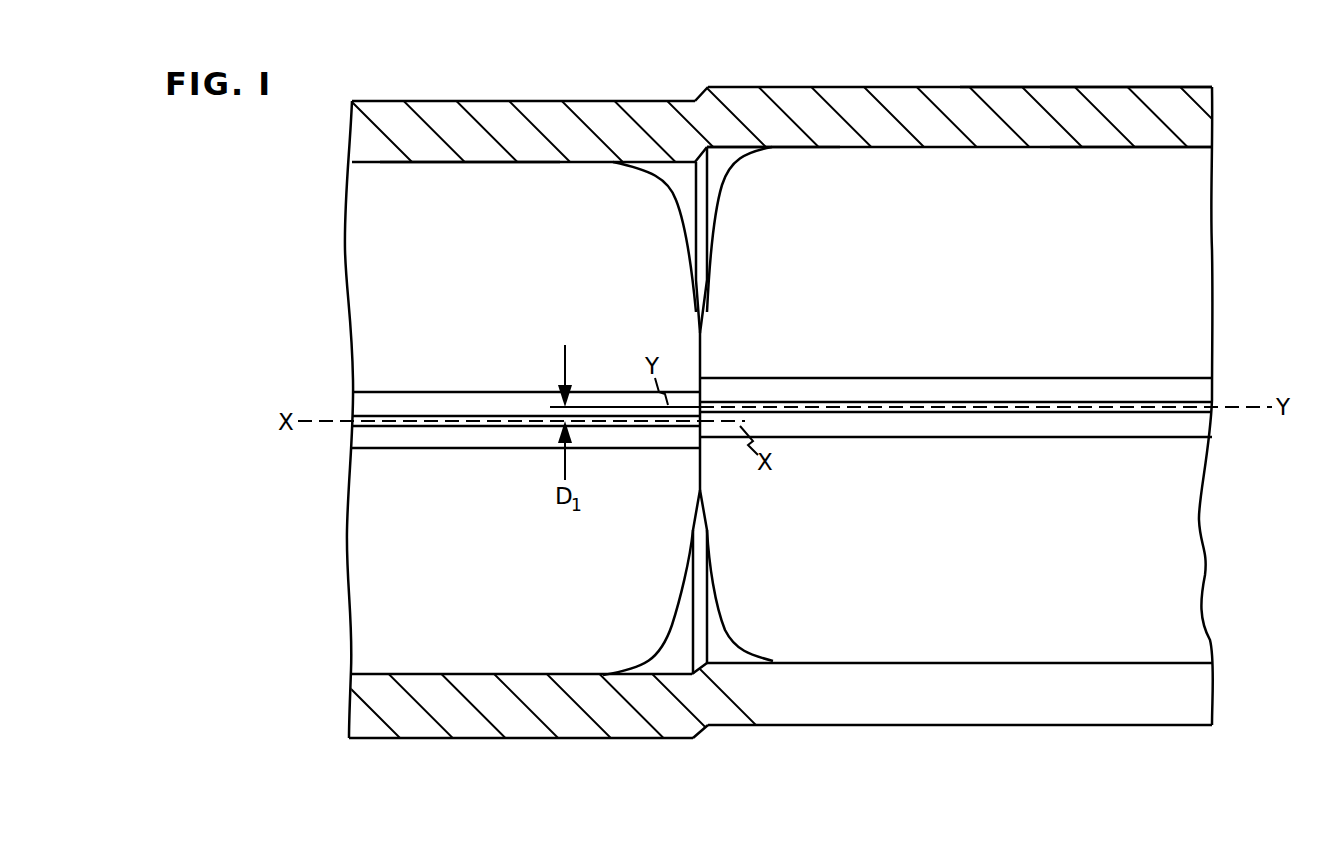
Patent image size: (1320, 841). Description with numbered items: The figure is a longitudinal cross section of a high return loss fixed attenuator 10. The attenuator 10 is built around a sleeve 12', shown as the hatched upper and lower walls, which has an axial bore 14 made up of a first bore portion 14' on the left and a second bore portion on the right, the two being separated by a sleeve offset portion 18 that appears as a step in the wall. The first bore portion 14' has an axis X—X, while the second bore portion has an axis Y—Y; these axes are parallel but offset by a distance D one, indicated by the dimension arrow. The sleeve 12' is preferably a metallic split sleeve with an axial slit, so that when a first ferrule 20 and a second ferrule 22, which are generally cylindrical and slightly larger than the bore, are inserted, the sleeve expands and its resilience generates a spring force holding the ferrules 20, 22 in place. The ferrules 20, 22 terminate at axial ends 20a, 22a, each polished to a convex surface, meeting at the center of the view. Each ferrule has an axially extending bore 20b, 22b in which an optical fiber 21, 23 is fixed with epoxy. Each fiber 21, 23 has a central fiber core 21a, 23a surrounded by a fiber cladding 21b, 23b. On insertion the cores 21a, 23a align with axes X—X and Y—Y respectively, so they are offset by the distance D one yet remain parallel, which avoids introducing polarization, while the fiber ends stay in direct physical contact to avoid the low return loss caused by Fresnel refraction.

The high return loss fixed attenuator 10 is at (840, 70).
The sleeve 12' is at (1086, 58).
The axial bore 14 is at (773, 102).
The first bore portion 14' is at (470, 111).
The sleeve offset portion 18 is at (700, 97).
The ferrule 20 is at (345, 630).
The axial end 20a is at (672, 180).
The axially extending bore 20b is at (408, 392).
The optical fiber 21 is at (466, 455).
The fiber core 21a is at (377, 427).
The fiber cladding 21b is at (495, 400).
The ferrule 22 is at (1216, 553).
The axial end 22a is at (728, 192).
The axially extending bore 22b is at (853, 384).
The optical fiber 23 is at (984, 440).
The fiber core 23a is at (1172, 412).
The fiber cladding 23b is at (1036, 388).